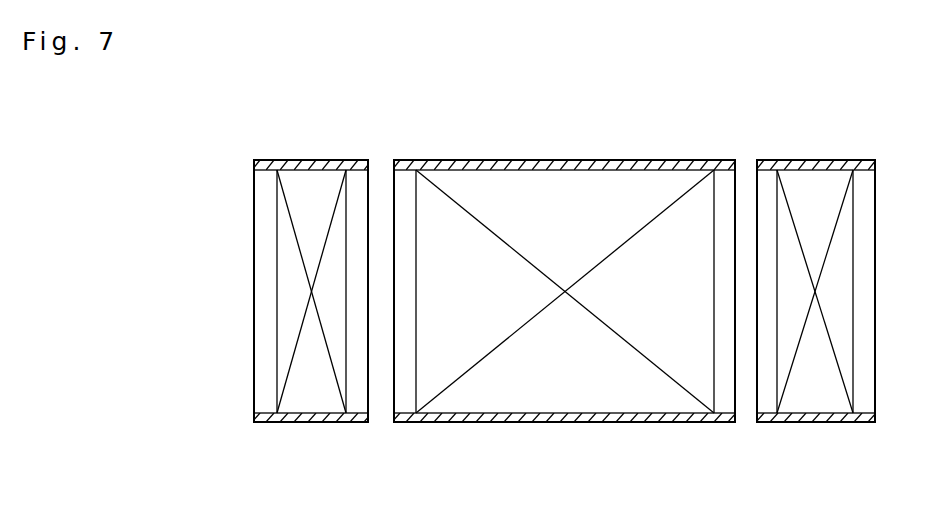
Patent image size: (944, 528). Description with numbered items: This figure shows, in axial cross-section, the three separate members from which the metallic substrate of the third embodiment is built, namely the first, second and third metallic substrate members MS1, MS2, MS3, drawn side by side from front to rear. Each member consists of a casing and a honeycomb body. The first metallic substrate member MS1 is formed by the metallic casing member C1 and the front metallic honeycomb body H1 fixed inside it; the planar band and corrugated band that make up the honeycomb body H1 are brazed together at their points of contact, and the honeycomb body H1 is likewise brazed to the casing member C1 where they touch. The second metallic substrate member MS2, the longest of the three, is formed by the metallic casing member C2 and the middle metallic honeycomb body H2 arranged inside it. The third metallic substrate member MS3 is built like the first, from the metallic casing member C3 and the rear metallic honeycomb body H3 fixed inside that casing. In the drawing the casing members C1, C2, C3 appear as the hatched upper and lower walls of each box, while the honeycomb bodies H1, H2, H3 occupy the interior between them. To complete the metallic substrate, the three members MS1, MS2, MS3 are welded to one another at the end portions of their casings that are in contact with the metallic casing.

The first metallic substrate member MS1 is at (316, 286).
The second metallic substrate member MS2 is at (564, 286).
The third metallic substrate member MS3 is at (814, 286).
The front metallic honeycomb body H1 is at (315, 407).
The middle metallic honeycomb body H2 is at (506, 402).
The rear metallic honeycomb body H3 is at (795, 400).
The metallic casing member C1 is at (348, 420).
The metallic casing member C2 is at (582, 423).
The metallic casing member C3 is at (825, 423).